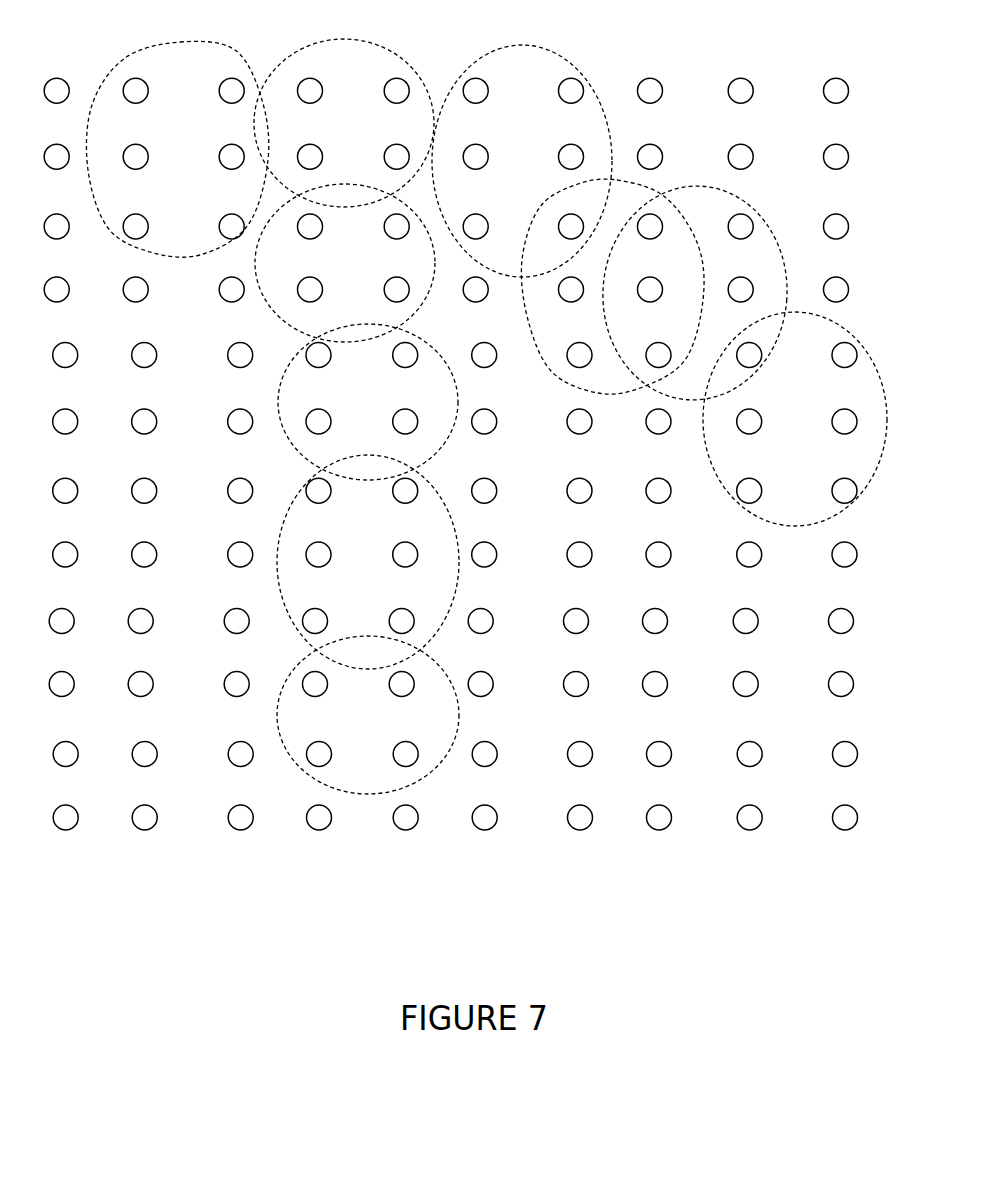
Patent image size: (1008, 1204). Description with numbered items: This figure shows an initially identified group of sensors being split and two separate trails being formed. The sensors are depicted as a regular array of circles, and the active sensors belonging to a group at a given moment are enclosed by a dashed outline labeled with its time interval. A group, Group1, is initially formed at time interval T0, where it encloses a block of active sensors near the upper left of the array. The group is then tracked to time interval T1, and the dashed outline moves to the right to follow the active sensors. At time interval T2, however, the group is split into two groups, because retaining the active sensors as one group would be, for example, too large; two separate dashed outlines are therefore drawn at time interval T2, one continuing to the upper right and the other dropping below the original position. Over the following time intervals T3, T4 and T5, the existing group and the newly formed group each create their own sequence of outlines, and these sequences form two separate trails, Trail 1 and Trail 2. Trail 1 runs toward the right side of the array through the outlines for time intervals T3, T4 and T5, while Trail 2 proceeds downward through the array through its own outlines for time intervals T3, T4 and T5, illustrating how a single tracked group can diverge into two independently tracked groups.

The time interval T0 is at (177, 149).
The time interval T1 is at (344, 123).
The time interval T2 is at (433, 193).
The time interval T3 is at (491, 329).
The time interval T4 is at (535, 424).
The time interval T5 is at (582, 553).
The initially identified group of sensors Group1 is at (177, 149).
The trail 1 Trail 1 is at (704, 354).
The trail 2 Trail 2 is at (334, 490).